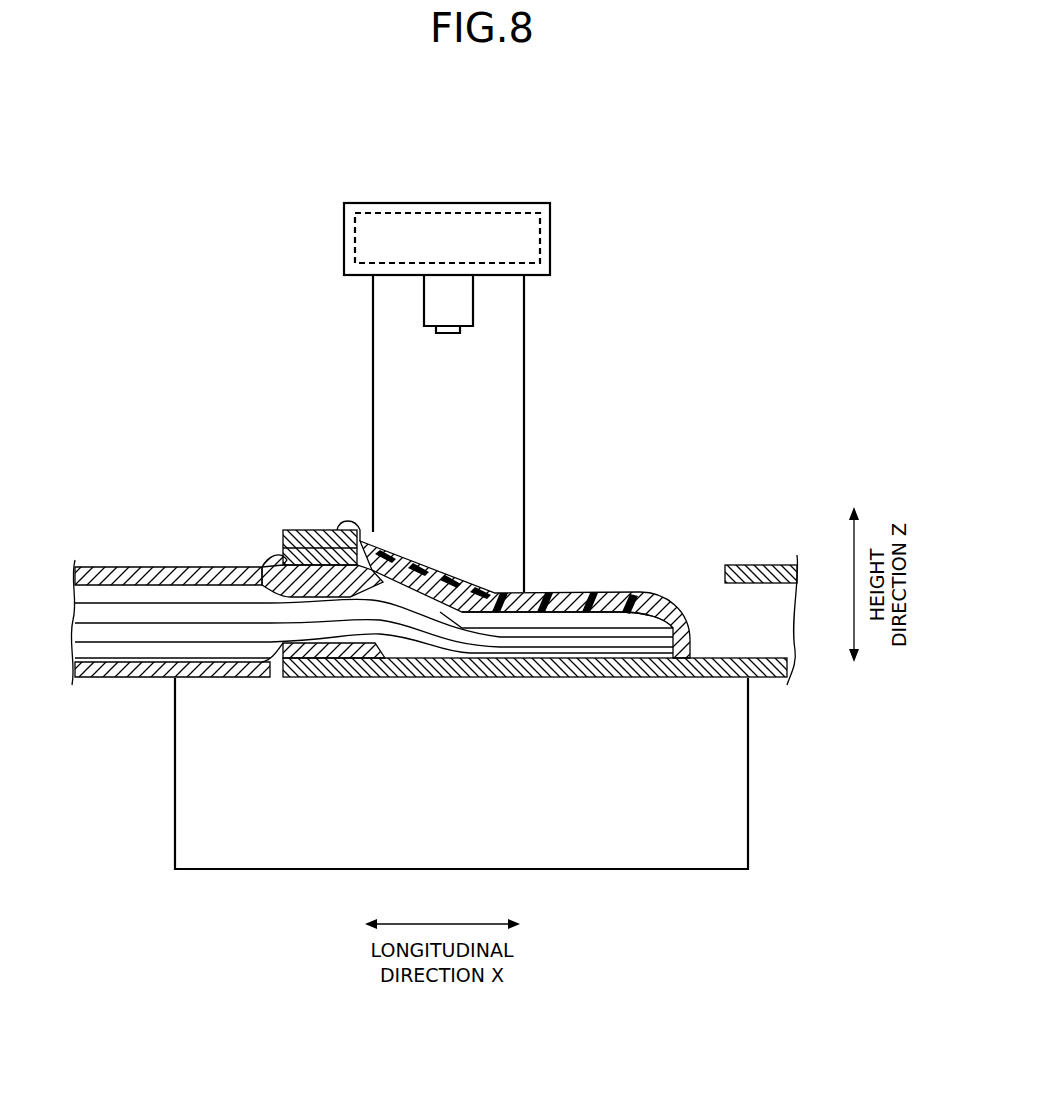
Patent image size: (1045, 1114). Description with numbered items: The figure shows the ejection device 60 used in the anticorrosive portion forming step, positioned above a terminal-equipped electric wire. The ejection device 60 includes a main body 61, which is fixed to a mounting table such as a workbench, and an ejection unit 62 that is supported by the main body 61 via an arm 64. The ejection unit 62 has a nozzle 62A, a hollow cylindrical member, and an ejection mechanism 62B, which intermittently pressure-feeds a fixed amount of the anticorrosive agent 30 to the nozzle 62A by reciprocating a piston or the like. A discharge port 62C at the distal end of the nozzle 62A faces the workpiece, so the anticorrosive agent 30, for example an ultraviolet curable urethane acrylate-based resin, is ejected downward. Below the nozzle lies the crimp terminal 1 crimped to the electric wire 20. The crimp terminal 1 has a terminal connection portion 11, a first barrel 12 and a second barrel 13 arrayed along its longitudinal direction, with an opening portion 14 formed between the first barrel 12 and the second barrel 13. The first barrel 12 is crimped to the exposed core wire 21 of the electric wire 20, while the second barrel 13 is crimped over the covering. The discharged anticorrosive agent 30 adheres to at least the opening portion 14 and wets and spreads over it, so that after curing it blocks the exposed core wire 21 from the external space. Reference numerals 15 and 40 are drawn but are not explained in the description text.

The crimp terminal 1 is at (425, 573).
The terminal connection portion 11 is at (754, 559).
The first barrel 12 is at (603, 598).
The second barrel 13 is at (278, 528).
The opening portion 14 is at (413, 583).
The terminal plate 15 is at (333, 680).
The electric wire 20 is at (122, 550).
The core wire 21 is at (465, 603).
The anticorrosive agent 30 is at (456, 570).
The sheath 40 is at (272, 553).
The ejection device 60 is at (487, 340).
The main body 61 is at (763, 737).
The ejection unit 62 is at (487, 266).
The nozzle 62A is at (474, 292).
The ejection mechanism 62B is at (395, 215).
The discharge port 62C is at (449, 333).
The arm 64 is at (524, 432).